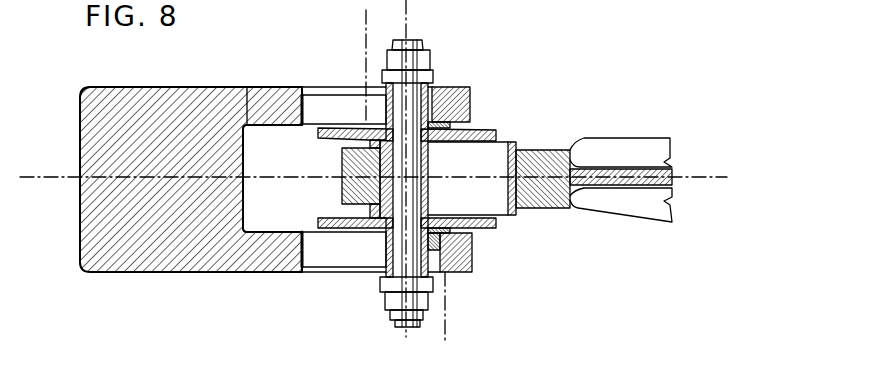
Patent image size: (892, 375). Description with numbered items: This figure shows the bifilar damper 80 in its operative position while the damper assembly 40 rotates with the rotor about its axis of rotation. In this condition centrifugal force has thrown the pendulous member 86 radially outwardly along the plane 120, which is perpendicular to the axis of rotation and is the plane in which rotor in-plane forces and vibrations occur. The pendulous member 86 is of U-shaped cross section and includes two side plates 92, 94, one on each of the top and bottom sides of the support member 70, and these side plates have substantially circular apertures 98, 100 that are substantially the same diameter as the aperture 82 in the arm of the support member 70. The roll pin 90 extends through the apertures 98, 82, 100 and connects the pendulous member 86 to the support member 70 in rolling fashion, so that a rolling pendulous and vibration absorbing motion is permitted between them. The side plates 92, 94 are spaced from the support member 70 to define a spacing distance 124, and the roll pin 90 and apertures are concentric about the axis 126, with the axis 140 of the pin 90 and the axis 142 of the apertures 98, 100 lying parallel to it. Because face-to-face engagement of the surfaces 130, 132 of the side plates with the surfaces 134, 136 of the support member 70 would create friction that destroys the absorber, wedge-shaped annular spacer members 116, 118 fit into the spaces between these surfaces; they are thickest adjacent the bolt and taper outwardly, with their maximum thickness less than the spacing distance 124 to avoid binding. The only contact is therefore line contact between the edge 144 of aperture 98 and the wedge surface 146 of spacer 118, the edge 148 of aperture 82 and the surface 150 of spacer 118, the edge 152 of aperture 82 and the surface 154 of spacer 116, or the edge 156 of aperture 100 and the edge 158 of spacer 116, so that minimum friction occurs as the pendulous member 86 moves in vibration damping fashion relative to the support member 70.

The damper assembly 40 is at (681, 119).
The support member 70 is at (604, 170).
The bifilar damper 80 is at (156, 86).
The aperture 82 is at (523, 150).
The pendulous member 86 is at (84, 96).
The roll pin 90 is at (422, 48).
The side plate 92 is at (264, 92).
The side plate 94 is at (266, 258).
The aperture 98 is at (296, 95).
The aperture 100 is at (292, 274).
The annular spacer member 116 is at (494, 225).
The annular spacer member 118 is at (470, 141).
The plane 120 is at (692, 177).
The spacing distance 124 is at (458, 143).
The axis 126 is at (446, 338).
The surface 130 is at (478, 126).
The surface 132 is at (470, 236).
The surface 134 is at (325, 151).
The surface 136 is at (347, 210).
The axis 140 is at (410, 22).
The axis 142 is at (366, 22).
The edge 144 is at (440, 90).
The wedge surface 146 is at (488, 130).
The edge 148 is at (343, 158).
The surface 150 is at (332, 141).
The edge 152 is at (343, 197).
The surface 154 is at (358, 229).
The edge 156 is at (437, 251).
The edge 158 is at (475, 214).